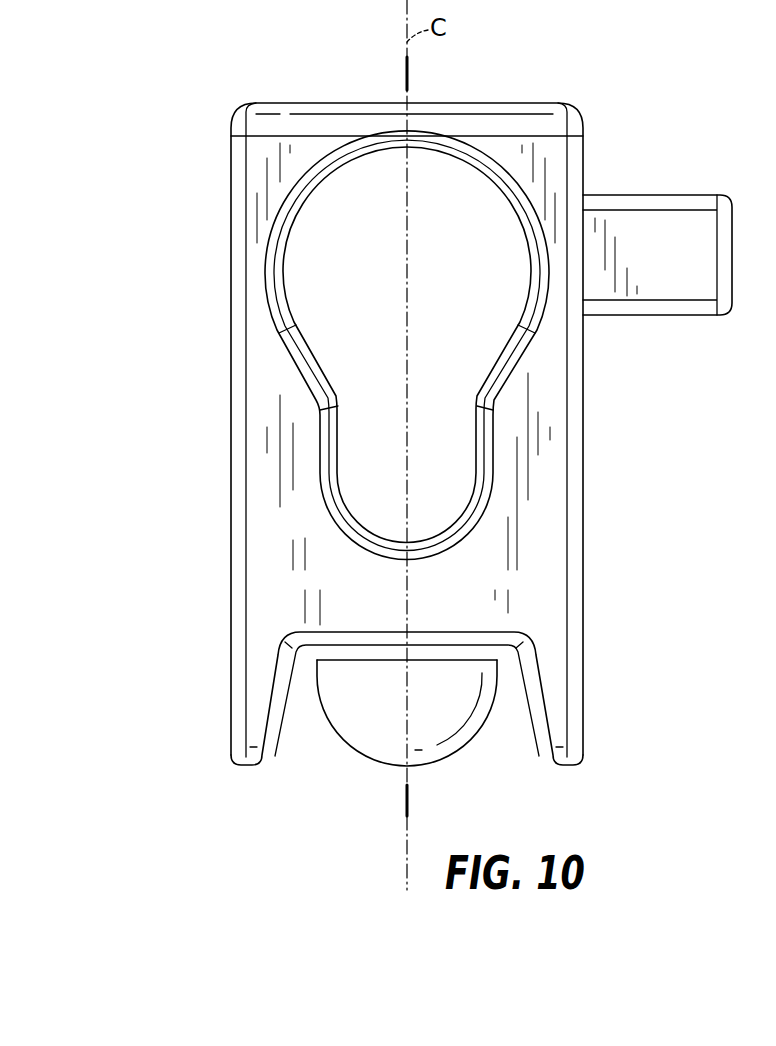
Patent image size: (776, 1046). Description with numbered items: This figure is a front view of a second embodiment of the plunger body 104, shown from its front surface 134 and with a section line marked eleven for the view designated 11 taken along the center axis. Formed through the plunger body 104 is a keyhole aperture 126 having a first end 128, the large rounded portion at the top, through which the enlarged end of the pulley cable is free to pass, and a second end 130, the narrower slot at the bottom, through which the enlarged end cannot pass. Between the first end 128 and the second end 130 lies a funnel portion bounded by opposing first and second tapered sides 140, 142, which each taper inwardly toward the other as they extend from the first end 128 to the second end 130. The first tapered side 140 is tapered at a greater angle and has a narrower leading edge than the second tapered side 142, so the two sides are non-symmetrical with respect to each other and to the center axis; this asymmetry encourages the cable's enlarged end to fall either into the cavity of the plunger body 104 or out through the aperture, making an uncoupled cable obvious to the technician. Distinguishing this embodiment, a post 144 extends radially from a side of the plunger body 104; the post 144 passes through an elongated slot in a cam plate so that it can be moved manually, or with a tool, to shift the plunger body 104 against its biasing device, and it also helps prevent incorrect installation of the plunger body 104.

The section line 11- 11 is at (396, 67).
The plunger body 104 is at (637, 94).
The keyhole aperture 126 is at (425, 270).
The first end 128 is at (492, 172).
The second end 130 is at (346, 525).
The front surface 134 is at (549, 490).
The first tapered side 140 is at (481, 370).
The second tapered side 142 is at (312, 362).
The post 144 is at (671, 222).